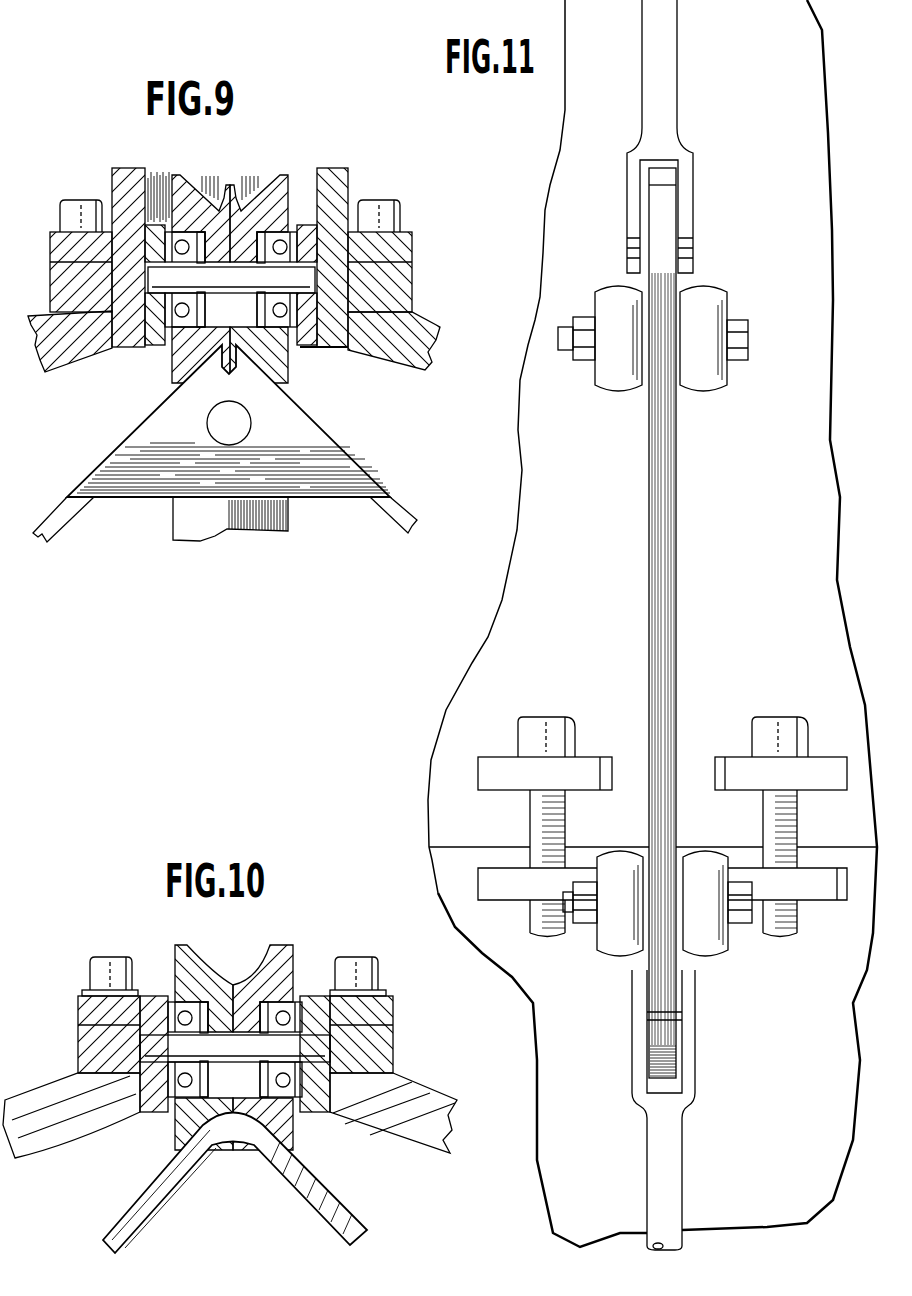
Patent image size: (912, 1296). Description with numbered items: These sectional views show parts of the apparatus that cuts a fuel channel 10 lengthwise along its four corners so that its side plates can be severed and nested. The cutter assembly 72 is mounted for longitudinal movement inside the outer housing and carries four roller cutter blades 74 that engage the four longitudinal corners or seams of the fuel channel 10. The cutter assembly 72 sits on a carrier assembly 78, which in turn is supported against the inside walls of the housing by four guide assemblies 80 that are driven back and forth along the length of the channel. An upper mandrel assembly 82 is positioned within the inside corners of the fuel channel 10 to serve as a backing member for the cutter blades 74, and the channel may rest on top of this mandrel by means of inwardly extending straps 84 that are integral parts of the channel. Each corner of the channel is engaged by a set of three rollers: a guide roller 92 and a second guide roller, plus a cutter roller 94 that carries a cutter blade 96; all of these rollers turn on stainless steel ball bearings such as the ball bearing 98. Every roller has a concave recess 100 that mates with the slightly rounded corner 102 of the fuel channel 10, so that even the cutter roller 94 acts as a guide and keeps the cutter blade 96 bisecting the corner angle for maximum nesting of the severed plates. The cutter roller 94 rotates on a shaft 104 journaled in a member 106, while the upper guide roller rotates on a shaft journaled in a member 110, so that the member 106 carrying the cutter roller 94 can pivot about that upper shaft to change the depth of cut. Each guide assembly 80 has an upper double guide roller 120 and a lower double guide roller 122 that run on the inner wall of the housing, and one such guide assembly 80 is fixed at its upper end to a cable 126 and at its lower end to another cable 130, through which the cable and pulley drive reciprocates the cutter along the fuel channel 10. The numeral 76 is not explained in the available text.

In FIG. 9, the fuel channel 10 is at (70, 512).
In FIG. 10, the fuel channel 10 is at (181, 1190).
In FIG. 9, the cutter assembly 72 is at (440, 327).
In FIG. 10, the cutter assembly 72 is at (447, 1100).
In FIG. 11, the cutter assembly 72 is at (502, 597).
In FIG. 9, the roller cutter blades 74 is at (350, 362).
In FIG. 10, the forming roller assembly 76 is at (72, 1048).
In FIG. 11, the carrier assembly 78 is at (452, 884).
In FIG. 11, the guide assemblies 80 is at (676, 572).
In FIG. 9, the upper mandrel assembly 82 is at (242, 532).
In FIG. 9, the inwardly extending straps 84 is at (110, 463).
In FIG. 10, the guide roller 92 is at (198, 965).
In FIG. 9, the cutter roller 94 is at (293, 185).
In FIG. 9, the cutter blade 96 is at (222, 183).
In FIG. 9, the ball bearing 98 is at (297, 235).
In FIG. 10, the ball bearing 98 is at (297, 1017).
In FIG. 9, the concave recess 100 is at (254, 210).
In FIG. 10, the concave recess 100 is at (247, 980).
In FIG. 9, the rounded corner 102 is at (207, 348).
In FIG. 10, the rounded corner 102 is at (190, 1148).
In FIG. 9, the shaft 104 is at (292, 348).
In FIG. 9, the member 106 is at (168, 218).
In FIG. 9, the member 110 is at (113, 188).
In FIG. 11, the upper double guide roller 120 is at (637, 390).
In FIG. 11, the lower double guide roller 122 is at (697, 948).
In FIG. 11, the cable 126 is at (668, 72).
In FIG. 11, the cable 130 is at (675, 1177).